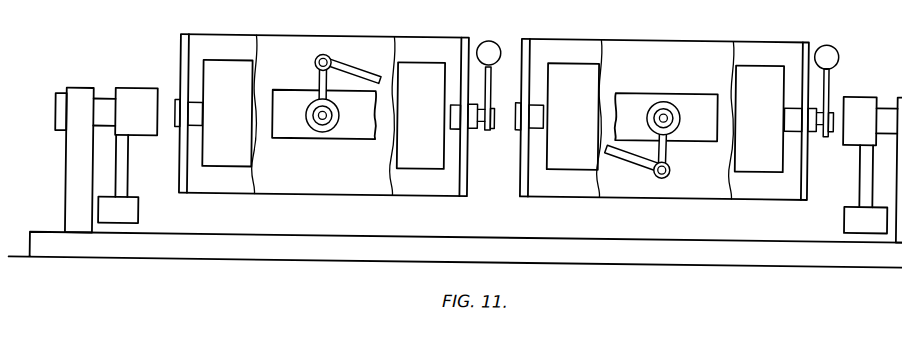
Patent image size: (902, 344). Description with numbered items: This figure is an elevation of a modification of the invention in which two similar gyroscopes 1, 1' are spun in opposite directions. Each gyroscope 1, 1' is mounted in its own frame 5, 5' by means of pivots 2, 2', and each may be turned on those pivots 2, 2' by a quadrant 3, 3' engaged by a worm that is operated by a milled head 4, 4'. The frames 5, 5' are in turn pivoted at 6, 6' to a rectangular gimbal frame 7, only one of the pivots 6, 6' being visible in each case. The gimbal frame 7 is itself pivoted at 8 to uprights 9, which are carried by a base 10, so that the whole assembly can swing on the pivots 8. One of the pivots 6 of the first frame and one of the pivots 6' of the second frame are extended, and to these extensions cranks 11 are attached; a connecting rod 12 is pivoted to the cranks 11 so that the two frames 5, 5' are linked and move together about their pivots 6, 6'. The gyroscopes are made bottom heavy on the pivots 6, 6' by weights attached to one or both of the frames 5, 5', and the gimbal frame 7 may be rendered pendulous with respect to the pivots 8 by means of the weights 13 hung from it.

The gyroscope 1 is at (323, 114).
The gyroscope 1' is at (665, 117).
The pivots 2 is at (330, 101).
The pivots 2' is at (669, 106).
The quadrant 3 is at (495, 98).
The quadrant 3' is at (837, 103).
The milled head 4 is at (489, 41).
The milled head 4' is at (836, 50).
The frame 5 is at (324, 115).
The frame 5' is at (679, 108).
The pivot 6 is at (314, 130).
The pivot 6' is at (668, 101).
The rectangular gimbal frame 7 is at (495, 147).
The pivots 8 is at (106, 107).
The uprights 9 is at (74, 160).
The base 10 is at (617, 260).
The crank 11 is at (318, 77).
The connecting rod 12 is at (365, 69).
The weights 13 is at (492, 215).